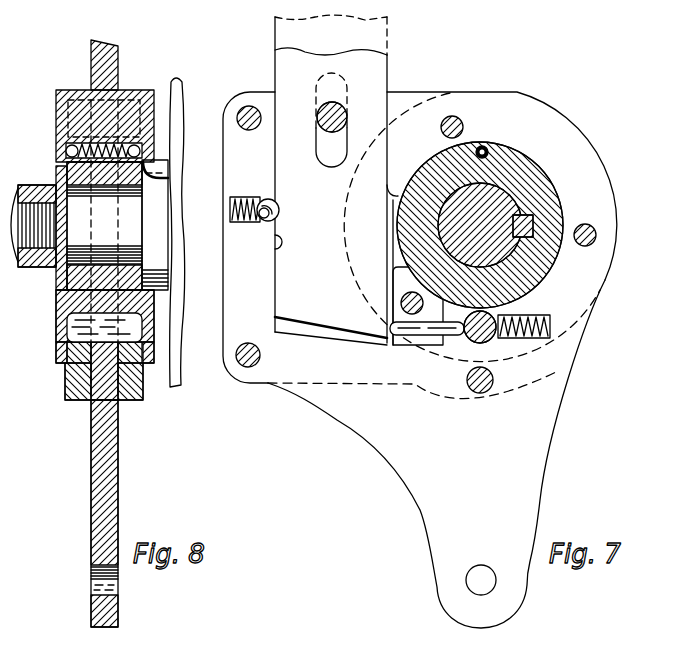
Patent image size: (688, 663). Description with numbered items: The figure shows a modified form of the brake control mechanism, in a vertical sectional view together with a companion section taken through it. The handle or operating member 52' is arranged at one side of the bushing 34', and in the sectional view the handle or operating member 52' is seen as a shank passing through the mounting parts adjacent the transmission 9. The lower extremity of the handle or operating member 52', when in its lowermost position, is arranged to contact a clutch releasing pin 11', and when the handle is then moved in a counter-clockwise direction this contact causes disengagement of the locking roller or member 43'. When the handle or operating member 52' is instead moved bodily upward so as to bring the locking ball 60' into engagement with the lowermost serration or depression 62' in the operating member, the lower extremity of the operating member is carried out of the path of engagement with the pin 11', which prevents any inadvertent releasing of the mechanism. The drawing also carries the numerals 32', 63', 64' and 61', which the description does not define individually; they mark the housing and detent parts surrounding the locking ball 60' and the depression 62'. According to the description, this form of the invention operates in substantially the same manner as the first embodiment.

In FIG. 8, the handle or operating member 52' is at (129, 333).
In FIG. 7, the handle or operating member 52' is at (360, 180).
In FIG. 8, the transmission 9 is at (178, 258).
In FIG. 7, the housing 32' is at (404, 357).
In FIG. 7, the bushing 34' is at (512, 212).
In FIG. 7, the clutch releasing pin 11' is at (412, 347).
In FIG. 7, the locking roller or member 43' is at (551, 337).
In FIG. 7, the spring housing 63' is at (226, 184).
In FIG. 7, the detent spring 64' is at (225, 198).
In FIG. 7, the locking ball 60' is at (300, 201).
In FIG. 7, the ball seat 61' is at (298, 213).
In FIG. 7, the lowermost serration or depression 62' is at (301, 246).